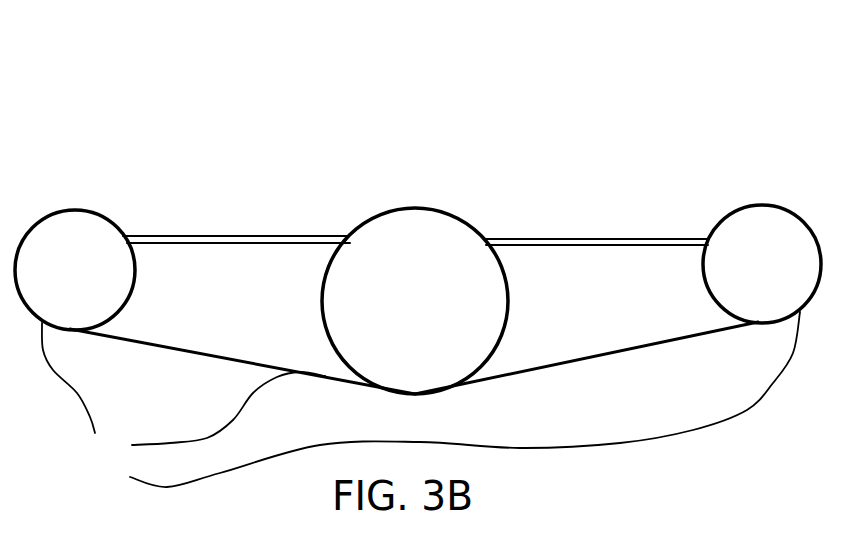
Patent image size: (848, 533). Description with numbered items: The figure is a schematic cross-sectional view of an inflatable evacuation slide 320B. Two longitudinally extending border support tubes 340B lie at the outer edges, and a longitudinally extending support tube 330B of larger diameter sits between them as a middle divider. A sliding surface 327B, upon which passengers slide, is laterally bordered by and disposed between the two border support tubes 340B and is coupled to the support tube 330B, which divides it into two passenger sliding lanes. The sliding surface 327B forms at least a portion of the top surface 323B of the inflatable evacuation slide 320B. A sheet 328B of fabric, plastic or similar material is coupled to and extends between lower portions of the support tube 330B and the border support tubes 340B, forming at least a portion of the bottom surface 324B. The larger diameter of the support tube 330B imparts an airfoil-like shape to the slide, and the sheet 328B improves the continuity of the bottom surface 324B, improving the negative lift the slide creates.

The inflatable evacuation slide 320B is at (163, 100).
The top surface 323B is at (720, 222).
The bottom surface 324B is at (421, 399).
The sliding surface 327B is at (273, 237).
The sheet 328B is at (242, 362).
The longitudinally extending support tube 330B is at (450, 333).
The longitudinally extending border support tubes 340B is at (67, 255).